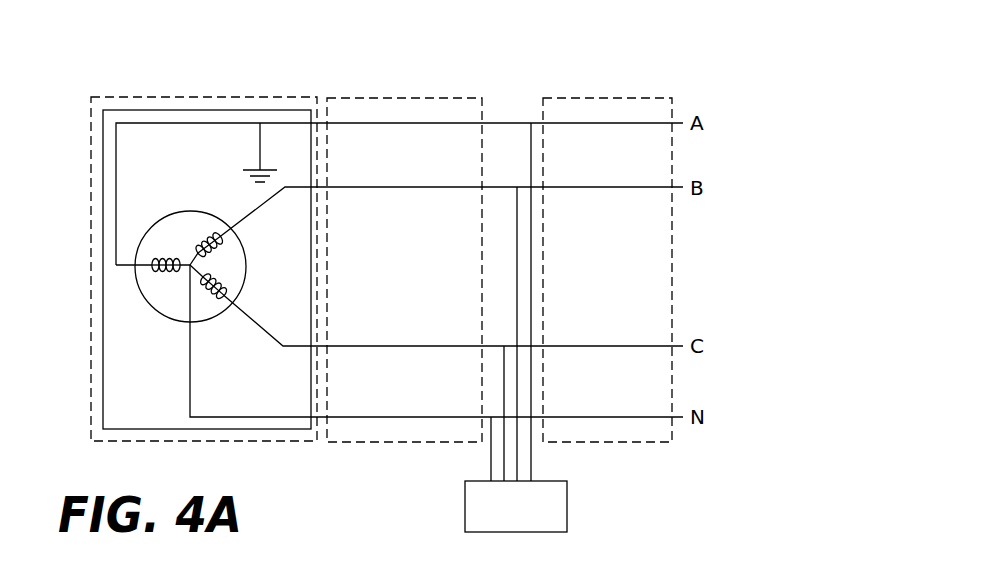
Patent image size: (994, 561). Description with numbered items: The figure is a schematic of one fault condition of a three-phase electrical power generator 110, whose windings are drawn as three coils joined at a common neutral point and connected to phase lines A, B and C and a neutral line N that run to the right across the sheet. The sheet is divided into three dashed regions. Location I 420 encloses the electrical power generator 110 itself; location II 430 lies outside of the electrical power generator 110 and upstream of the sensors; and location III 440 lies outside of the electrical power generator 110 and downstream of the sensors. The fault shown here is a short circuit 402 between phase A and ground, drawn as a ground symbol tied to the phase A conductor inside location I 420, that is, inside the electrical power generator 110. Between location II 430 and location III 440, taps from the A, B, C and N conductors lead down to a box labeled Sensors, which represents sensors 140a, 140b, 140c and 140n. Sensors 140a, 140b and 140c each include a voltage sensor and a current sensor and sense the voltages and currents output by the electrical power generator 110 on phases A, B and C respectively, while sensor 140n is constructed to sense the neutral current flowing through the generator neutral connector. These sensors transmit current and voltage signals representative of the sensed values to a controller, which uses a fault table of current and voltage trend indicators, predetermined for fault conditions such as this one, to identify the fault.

The electrical power generator 110 is at (102, 160).
The short circuit 402 is at (253, 162).
The location I 420 is at (208, 70).
The location II 430 is at (430, 65).
The location III 440 is at (628, 65).
The sensor 140a is at (633, 327).
The sensor 140b is at (516, 327).
The sensor 140c is at (516, 327).
The sensor 140n is at (567, 496).